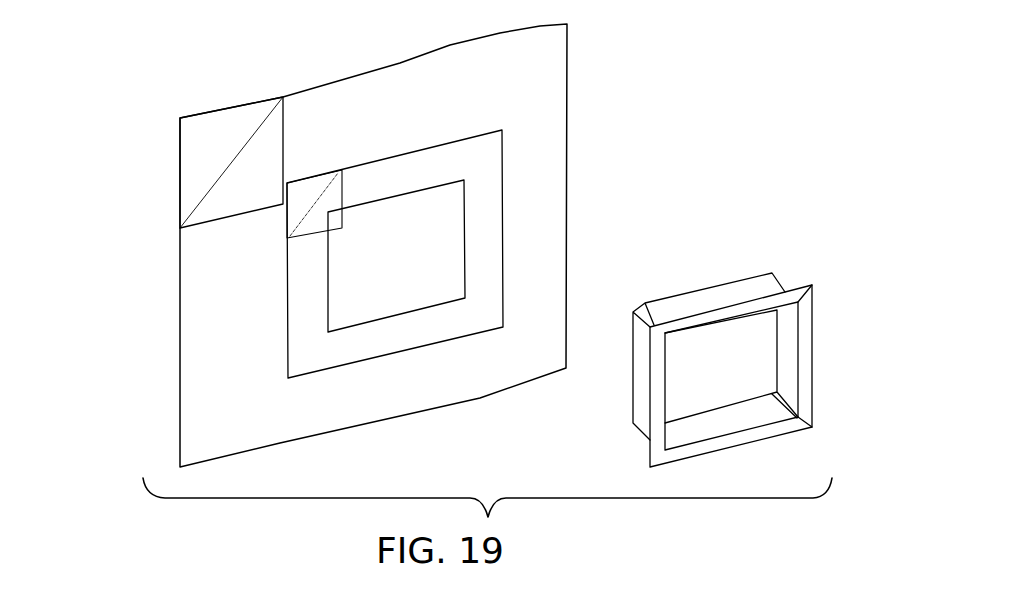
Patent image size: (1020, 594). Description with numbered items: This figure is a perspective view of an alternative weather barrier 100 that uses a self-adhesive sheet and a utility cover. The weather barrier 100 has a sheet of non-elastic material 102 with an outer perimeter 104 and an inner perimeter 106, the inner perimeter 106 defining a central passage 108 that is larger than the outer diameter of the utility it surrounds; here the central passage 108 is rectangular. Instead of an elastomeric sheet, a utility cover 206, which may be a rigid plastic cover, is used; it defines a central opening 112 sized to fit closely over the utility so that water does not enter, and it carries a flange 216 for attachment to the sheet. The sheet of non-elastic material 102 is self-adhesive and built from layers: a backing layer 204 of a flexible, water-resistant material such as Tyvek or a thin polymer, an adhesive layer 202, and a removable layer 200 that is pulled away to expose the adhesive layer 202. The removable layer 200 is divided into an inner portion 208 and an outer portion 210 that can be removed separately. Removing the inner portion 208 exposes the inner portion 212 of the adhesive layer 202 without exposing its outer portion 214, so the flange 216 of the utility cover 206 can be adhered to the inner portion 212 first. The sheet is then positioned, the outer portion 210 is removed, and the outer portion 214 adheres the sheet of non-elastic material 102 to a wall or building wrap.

The weather barrier 100 is at (649, 66).
The sheet of non-elastic material 102 is at (452, 70).
The outer perimeter 104 is at (567, 190).
The inner perimeter 106 is at (465, 252).
The central passage 108 is at (403, 297).
The central opening 112 is at (730, 355).
The removable layer 200 is at (232, 203).
The adhesive layer 202 is at (198, 183).
The backing layer 204 is at (178, 430).
The utility cover 206 is at (772, 283).
The inner portion of removable layer 208 is at (323, 216).
The outer portion of removable layer 210 is at (252, 163).
The inner portion of adhesive layer 212 is at (307, 190).
The outer portion of adhesive layer 214 is at (205, 136).
The flange 216 is at (802, 392).